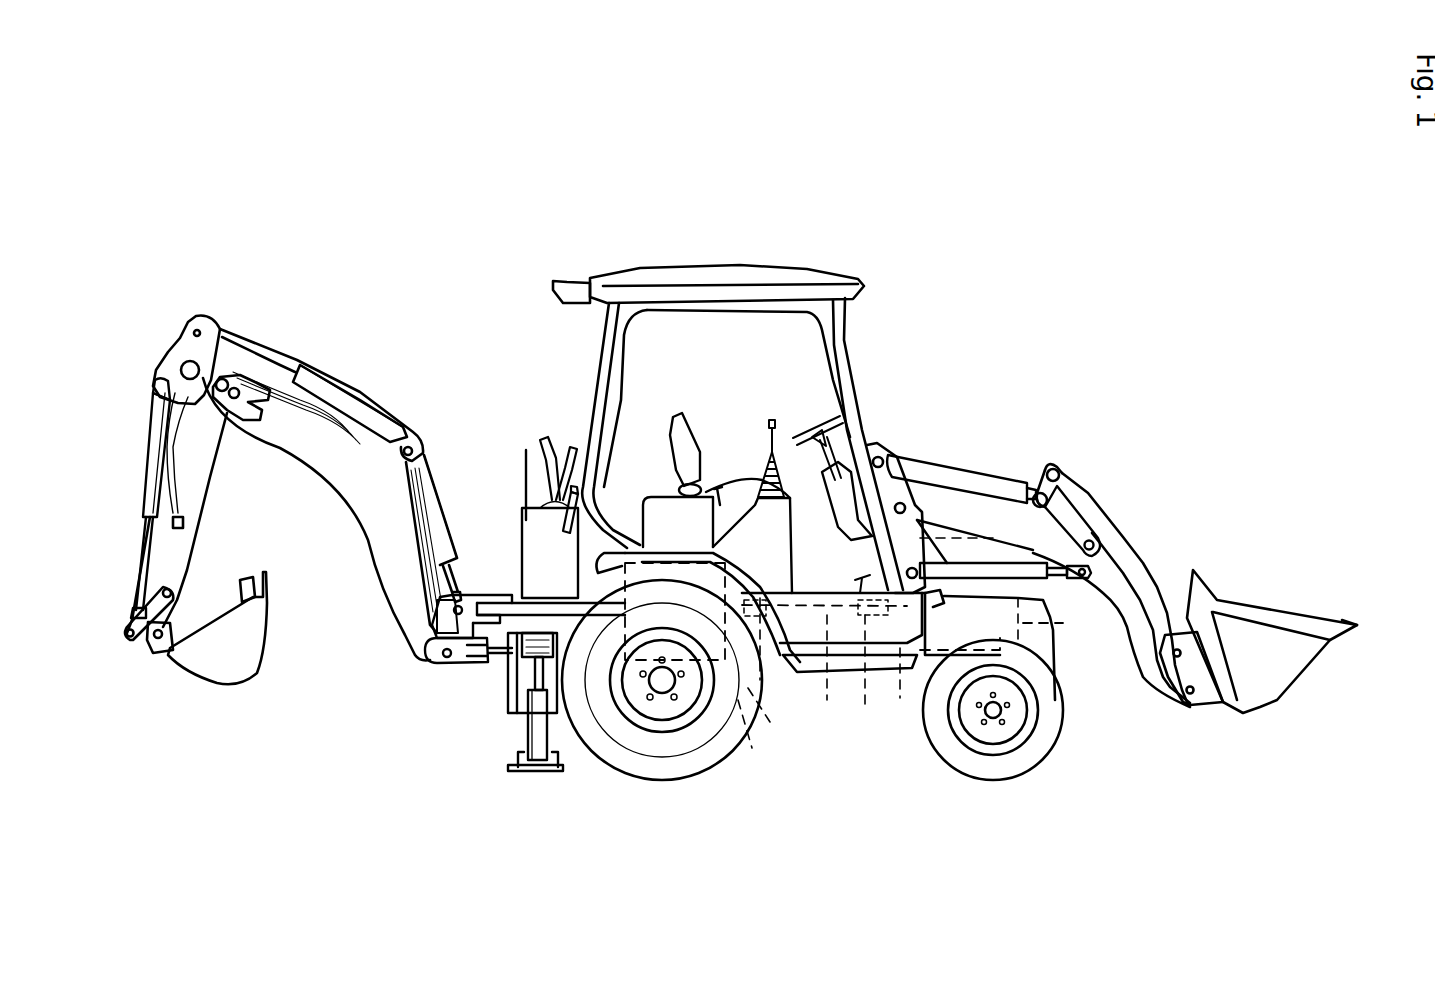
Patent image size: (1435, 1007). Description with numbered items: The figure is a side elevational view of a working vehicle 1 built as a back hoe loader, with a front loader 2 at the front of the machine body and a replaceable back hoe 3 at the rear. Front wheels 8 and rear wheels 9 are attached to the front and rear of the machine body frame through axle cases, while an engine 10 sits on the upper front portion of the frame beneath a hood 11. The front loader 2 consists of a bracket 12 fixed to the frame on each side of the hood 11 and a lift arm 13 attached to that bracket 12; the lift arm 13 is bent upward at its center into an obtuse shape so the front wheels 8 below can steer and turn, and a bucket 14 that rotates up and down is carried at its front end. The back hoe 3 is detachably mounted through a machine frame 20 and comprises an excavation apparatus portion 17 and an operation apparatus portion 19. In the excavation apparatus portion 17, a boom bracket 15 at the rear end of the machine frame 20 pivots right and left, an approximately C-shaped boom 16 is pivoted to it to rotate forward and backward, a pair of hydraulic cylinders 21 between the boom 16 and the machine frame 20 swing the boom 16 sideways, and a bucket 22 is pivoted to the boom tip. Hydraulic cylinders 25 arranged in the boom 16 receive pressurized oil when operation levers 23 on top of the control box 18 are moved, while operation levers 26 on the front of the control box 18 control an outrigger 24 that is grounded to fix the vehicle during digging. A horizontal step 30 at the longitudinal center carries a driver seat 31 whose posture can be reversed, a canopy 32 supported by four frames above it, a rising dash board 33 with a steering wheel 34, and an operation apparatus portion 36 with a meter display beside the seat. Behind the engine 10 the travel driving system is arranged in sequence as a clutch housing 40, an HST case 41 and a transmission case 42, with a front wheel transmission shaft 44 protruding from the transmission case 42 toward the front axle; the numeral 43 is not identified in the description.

The working vehicle 1 is at (352, 199).
The front loader 2 is at (1169, 494).
The back hoe 3 is at (479, 340).
The front wheels 8 is at (993, 782).
The rear wheels 9 is at (658, 781).
The engine 10 is at (1013, 646).
The hood 11 is at (950, 495).
The bracket 12 is at (894, 455).
The lift arm 13 is at (1018, 520).
The bucket 14 is at (1288, 620).
The boom bracket 15 is at (424, 652).
The boom 16 is at (330, 470).
The excavation apparatus portion 17 is at (345, 348).
The control box 18 is at (520, 560).
The operation apparatus portion 19 is at (534, 417).
The machine frame 20 is at (528, 603).
The hydraulic cylinders 21 is at (505, 656).
The bucket 22 is at (235, 688).
The operation levers 23 is at (560, 435).
The outrigger 24 is at (540, 772).
The hydraulic cylinders 25 is at (148, 455).
The operation levers 26 is at (576, 490).
The step 30 is at (810, 593).
The driver seat 31 is at (732, 478).
The canopy 32 is at (745, 265).
The dash board 33 is at (830, 474).
The steering wheel 34 is at (808, 428).
The operation apparatus portion 36 is at (770, 418).
The clutch housing 40 is at (906, 686).
The HST case 41 is at (776, 720).
The transmission case 42 is at (756, 742).
The engine 43 is at (830, 676).
The front wheel transmission shaft 44 is at (870, 680).